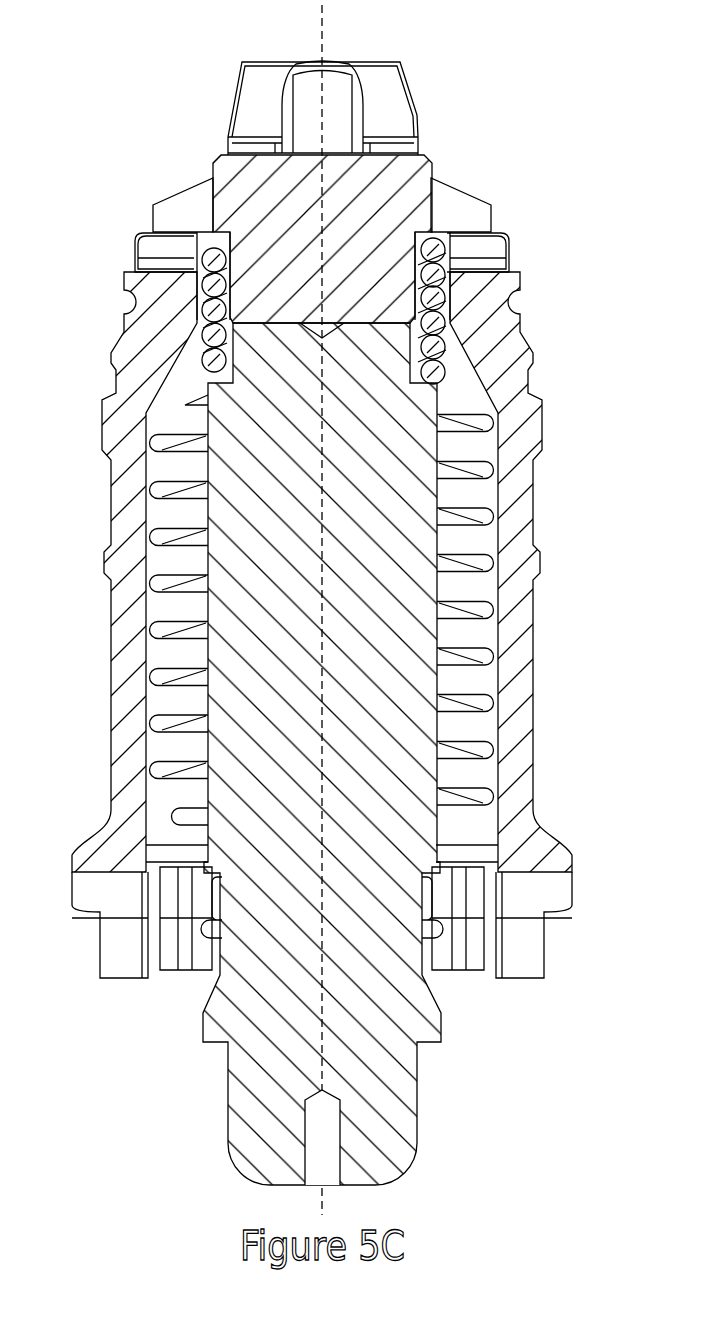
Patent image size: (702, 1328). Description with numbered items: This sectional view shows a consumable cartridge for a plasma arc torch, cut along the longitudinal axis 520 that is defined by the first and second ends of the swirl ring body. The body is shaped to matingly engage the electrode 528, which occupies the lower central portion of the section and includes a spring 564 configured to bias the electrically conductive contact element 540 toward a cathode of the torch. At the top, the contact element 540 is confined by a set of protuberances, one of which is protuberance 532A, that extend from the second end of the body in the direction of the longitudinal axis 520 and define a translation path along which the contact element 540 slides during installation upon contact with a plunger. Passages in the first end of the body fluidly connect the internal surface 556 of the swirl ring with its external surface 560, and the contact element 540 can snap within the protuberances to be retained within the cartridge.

The longitudinal axis 520 is at (320, 34).
The protuberance 532A is at (381, 62).
The contact element 540 is at (290, 77).
The spring 564 is at (452, 298).
The external surface 560 is at (112, 766).
The internal surface 556 is at (163, 900).
The electrode 528 is at (418, 1072).